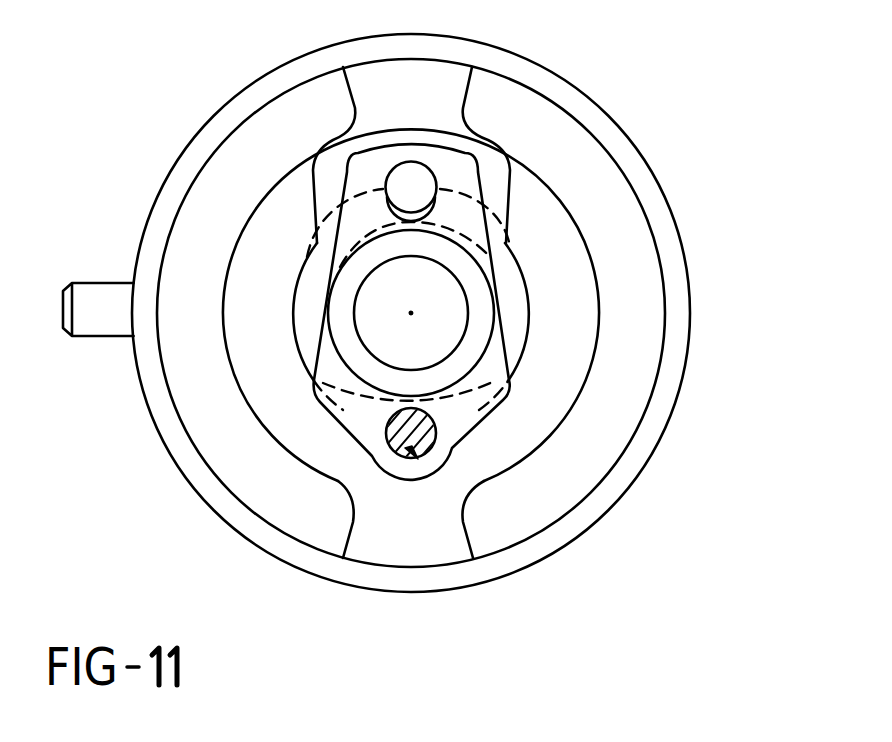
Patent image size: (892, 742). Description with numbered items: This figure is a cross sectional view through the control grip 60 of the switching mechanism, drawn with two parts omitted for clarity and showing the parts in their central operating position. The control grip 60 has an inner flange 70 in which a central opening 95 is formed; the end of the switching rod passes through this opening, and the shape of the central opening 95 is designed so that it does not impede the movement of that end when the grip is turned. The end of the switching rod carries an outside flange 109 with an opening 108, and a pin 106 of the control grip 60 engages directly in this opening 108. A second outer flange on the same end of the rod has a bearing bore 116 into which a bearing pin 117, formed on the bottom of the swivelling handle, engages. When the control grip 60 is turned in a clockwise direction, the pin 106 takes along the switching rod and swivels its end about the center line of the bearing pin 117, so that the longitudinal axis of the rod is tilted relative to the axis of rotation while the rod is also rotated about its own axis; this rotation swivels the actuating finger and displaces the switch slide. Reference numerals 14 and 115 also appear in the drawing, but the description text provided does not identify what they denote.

The shaft 14 is at (96, 327).
The control grip 60 is at (497, 570).
The inner flange 70 is at (572, 388).
The central opening 95 is at (520, 306).
The pin 106 is at (458, 88).
The opening 108 is at (430, 213).
The outside flange 109 is at (455, 164).
The pin section 115 is at (447, 445).
The bearing bore 116 is at (436, 430).
The bearing pin 117 is at (413, 453).